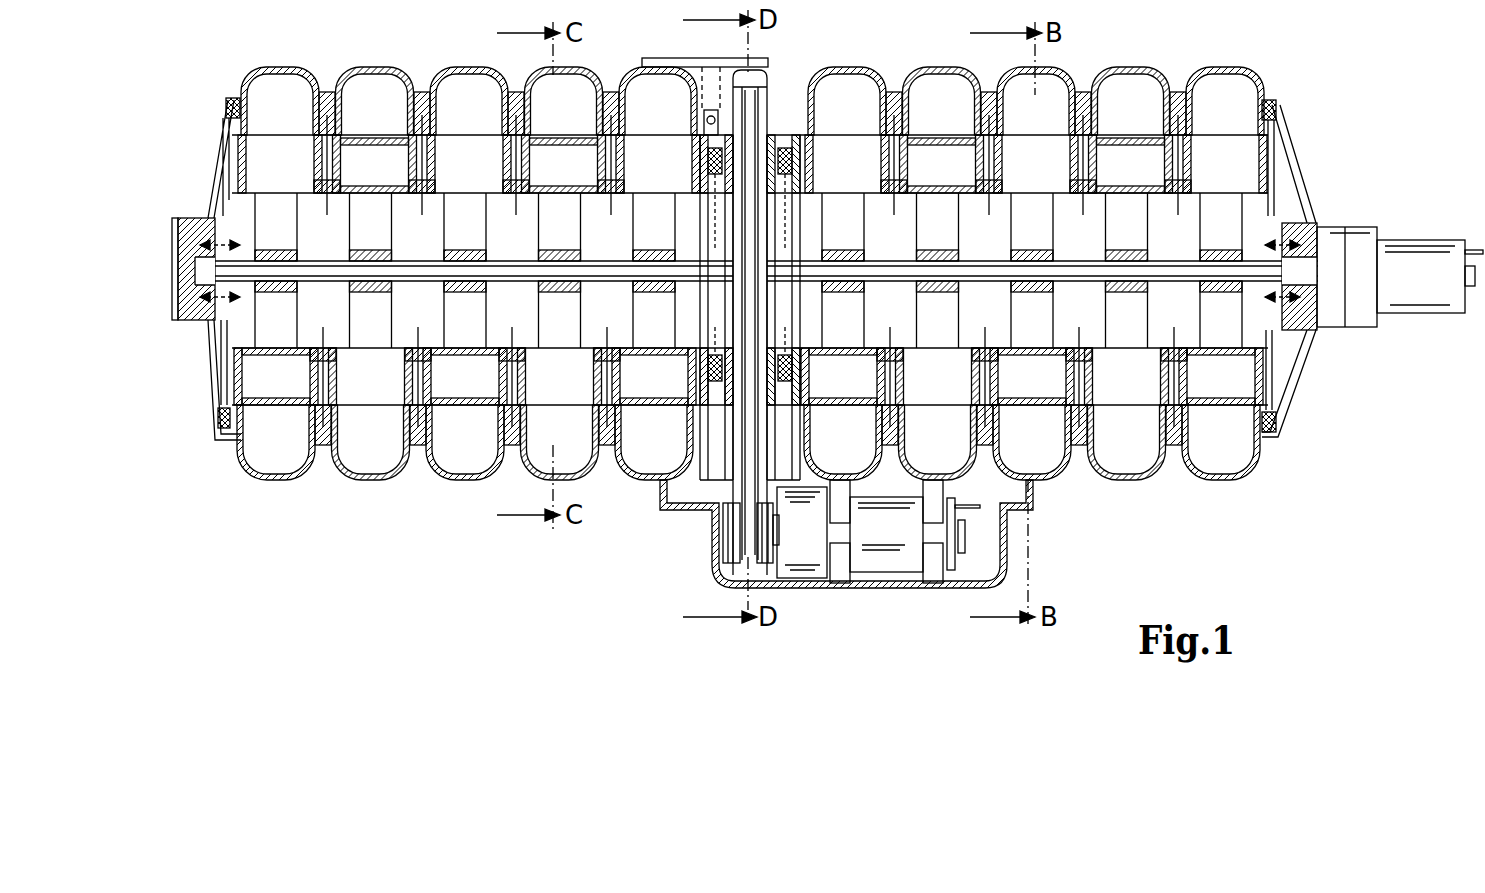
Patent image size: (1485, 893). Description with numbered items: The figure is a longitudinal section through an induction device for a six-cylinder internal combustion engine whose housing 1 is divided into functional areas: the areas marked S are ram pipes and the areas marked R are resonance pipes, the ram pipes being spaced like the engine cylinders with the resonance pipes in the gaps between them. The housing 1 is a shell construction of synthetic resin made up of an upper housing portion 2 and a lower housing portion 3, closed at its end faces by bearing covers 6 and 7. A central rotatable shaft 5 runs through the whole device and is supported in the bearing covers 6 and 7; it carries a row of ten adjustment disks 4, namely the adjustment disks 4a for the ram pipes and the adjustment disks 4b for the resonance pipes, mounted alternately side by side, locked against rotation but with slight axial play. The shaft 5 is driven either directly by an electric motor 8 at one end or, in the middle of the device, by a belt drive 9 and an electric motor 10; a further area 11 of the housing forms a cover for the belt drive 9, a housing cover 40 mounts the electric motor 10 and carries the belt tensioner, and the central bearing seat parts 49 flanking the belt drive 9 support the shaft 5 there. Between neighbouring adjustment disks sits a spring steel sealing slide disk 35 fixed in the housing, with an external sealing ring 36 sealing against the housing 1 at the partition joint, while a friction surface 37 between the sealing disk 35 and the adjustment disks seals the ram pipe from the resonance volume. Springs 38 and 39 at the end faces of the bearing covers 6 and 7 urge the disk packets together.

The housing 1 is at (825, 325).
The upper housing portion 2 is at (1241, 66).
The lower housing portion 3 is at (1130, 480).
The adjustment disk 4 is at (1230, 339).
The adjustment disk for ram pipes 4a is at (1147, 183).
The adjustment disk for resonance pipes 4b is at (1237, 396).
The shaft 5 is at (326, 268).
The bearing cover 6 is at (1295, 318).
The bearing cover 7 is at (182, 215).
The electric motor 8 is at (1397, 240).
The belt drive 9 is at (772, 101).
The electric motor 10 is at (878, 555).
The cover for the belt drive 11 is at (740, 77).
The sealing slide disk 35 is at (336, 388).
The external sealing ring 36 is at (300, 422).
The friction surface 37 is at (300, 373).
The spring 38 is at (1263, 243).
The spring 39 is at (240, 246).
The housing cover of the electric motor 40 is at (930, 592).
The bearing housing 49 is at (792, 213).